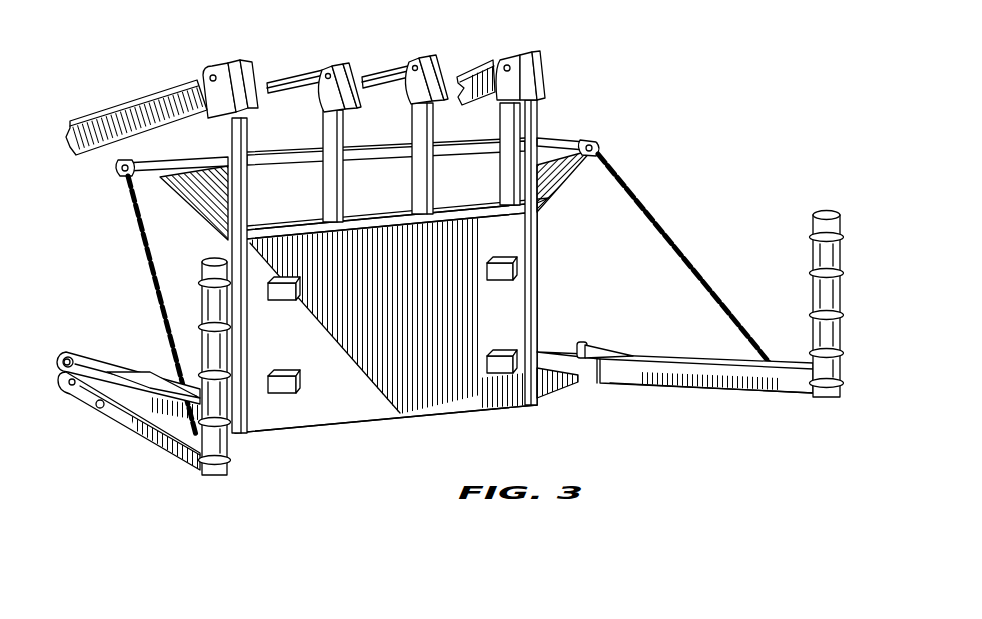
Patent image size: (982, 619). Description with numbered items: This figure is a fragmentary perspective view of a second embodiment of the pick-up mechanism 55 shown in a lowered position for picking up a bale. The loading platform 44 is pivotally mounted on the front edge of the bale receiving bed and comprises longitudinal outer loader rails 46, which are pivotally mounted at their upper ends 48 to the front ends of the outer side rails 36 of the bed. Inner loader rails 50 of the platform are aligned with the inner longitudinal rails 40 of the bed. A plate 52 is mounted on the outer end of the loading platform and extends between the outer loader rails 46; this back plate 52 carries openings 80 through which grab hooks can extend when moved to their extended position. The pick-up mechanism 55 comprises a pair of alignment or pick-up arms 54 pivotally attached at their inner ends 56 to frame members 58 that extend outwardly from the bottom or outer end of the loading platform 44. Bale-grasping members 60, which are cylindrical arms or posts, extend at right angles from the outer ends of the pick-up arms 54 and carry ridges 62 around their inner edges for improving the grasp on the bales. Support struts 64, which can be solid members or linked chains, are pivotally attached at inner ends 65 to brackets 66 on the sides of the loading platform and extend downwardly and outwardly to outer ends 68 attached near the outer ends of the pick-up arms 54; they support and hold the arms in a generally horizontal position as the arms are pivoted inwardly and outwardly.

The outer side rails 36 is at (113, 112).
The inner longitudinal rails 40 is at (405, 68).
The loading platform 44 is at (388, 405).
The outer loader rails 46 is at (222, 128).
The upper ends 48 is at (200, 78).
The inner loader rails 50 is at (432, 186).
The plate 52 is at (529, 303).
The pick-up arms 54 is at (148, 436).
The pick-up mechanism 55 is at (762, 398).
The inner ends 56 is at (92, 402).
The frame members 58 is at (152, 378).
The bale-grasping members 60 is at (849, 304).
The ridges 62 is at (843, 317).
The support struts 64 is at (138, 233).
The inner ends 65 is at (122, 177).
The brackets 66 is at (165, 178).
The outer ends 68 is at (193, 458).
The openings 80 is at (290, 372).